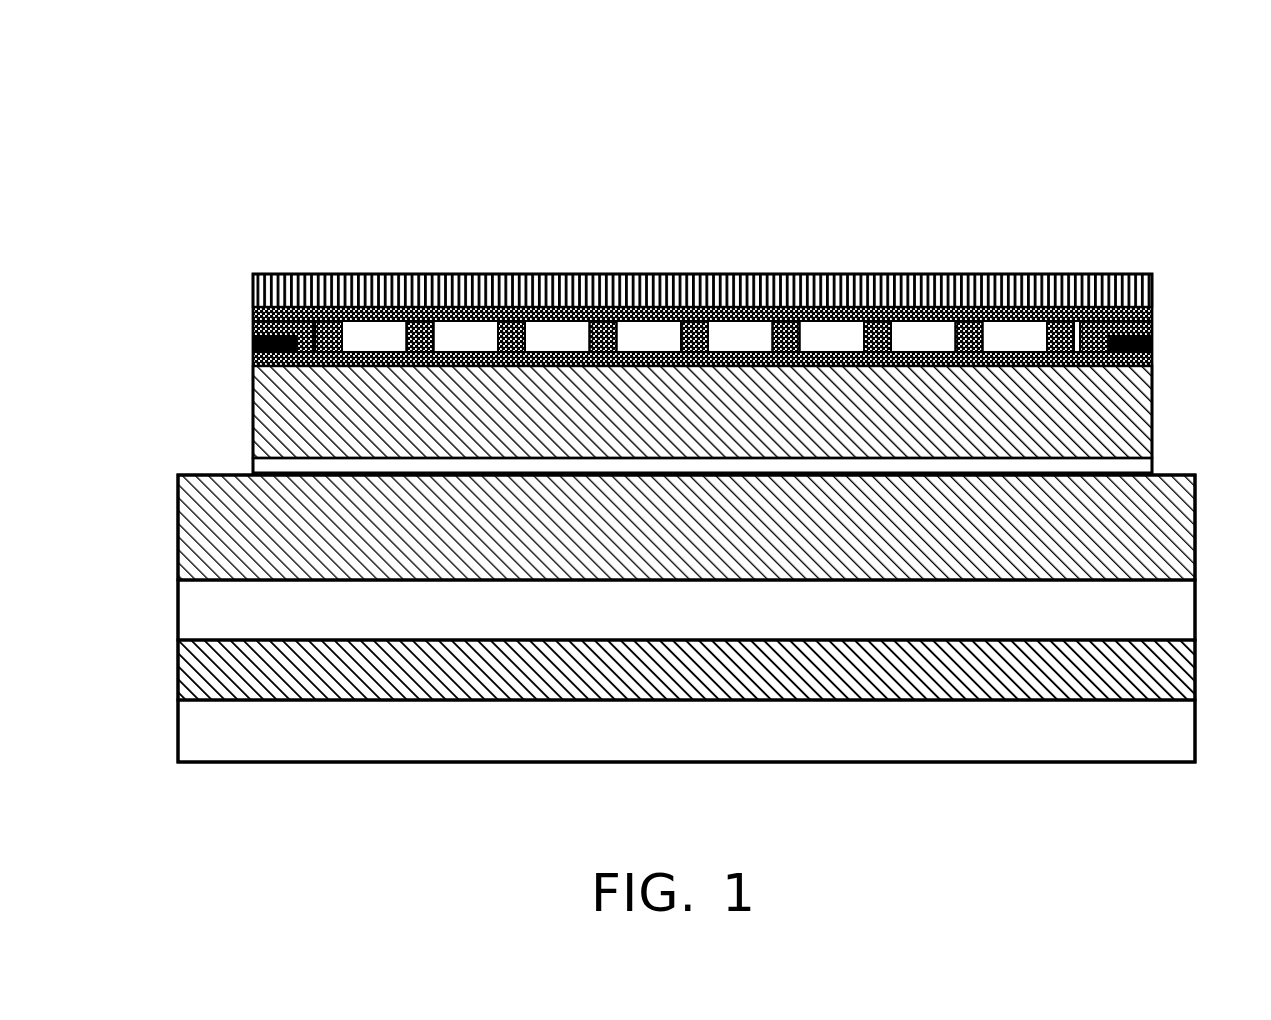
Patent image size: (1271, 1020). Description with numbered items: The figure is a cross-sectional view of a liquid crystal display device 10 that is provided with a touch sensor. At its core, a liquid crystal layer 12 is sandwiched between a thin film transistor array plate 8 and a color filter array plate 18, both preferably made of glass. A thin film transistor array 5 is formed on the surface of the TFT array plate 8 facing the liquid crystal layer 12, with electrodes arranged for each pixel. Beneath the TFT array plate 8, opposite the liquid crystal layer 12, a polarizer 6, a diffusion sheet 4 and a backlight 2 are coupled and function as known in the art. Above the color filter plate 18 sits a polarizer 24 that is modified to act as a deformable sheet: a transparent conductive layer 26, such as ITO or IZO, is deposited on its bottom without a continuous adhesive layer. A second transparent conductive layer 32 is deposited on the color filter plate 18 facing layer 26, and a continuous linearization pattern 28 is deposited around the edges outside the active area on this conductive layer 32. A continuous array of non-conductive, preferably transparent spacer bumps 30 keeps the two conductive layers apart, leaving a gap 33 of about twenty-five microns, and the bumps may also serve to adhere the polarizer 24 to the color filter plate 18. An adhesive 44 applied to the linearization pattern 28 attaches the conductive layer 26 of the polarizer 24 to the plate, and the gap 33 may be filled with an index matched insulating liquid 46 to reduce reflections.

The liquid crystal display device 10 is at (155, 152).
The thin film transistor array 5 is at (248, 462).
The polarizer 24 is at (258, 274).
The transparent conductive layer 26 is at (1155, 315).
The spacer bumps 30 is at (343, 333).
The gap 33 is at (745, 337).
The transparent conductive layer 32 is at (253, 357).
The adhesive 44 is at (1155, 333).
The linearization pattern 28 is at (255, 340).
The index matched insulating liquid 46 is at (1015, 337).
The color filter array plate 18 is at (253, 410).
The liquid crystal layer 12 is at (1152, 470).
The thin film transistor array plate 8 is at (178, 517).
The polarizer 6 is at (178, 611).
The diffusion sheet 4 is at (178, 660).
The backlight 2 is at (178, 730).